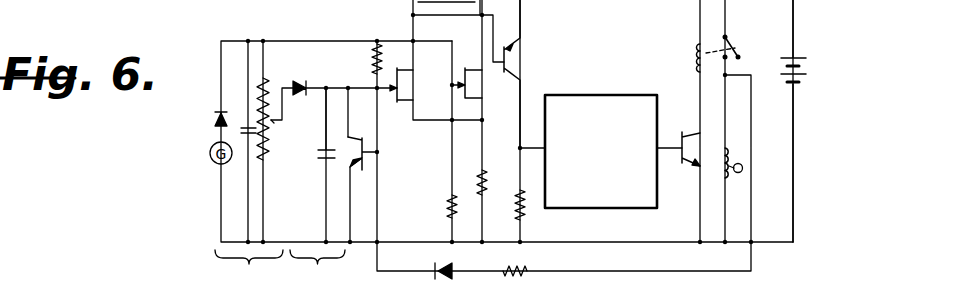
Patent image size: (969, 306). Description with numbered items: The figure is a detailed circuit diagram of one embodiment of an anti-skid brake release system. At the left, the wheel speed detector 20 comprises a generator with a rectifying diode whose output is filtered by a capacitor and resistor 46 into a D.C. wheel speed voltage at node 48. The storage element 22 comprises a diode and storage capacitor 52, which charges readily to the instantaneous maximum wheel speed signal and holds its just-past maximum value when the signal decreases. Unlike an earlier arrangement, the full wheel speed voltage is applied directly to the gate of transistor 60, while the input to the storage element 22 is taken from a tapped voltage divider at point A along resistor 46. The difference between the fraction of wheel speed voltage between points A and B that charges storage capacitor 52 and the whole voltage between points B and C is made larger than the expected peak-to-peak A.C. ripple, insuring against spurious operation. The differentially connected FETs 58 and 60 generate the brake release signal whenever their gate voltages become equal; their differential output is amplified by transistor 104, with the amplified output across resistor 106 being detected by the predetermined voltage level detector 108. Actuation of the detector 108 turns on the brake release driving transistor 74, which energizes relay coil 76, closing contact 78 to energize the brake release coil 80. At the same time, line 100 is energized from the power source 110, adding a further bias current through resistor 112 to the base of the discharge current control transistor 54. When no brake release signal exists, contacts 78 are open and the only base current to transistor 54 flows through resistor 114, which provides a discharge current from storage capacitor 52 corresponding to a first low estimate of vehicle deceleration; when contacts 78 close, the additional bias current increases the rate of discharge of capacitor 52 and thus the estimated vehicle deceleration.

The wheel speed detector 20 is at (249, 269).
The storage element 22 is at (317, 269).
The resistor 46 is at (278, 127).
The node 48 is at (248, 41).
The storage capacitor 52 is at (311, 159).
The discharge current control transistor 54 is at (372, 163).
The FET 58 is at (400, 85).
The FET 60 is at (468, 88).
The brake release driving transistor 74 is at (680, 146).
The relay coil 76 is at (694, 60).
The relay contact 78 is at (740, 50).
The brake release coil 80 is at (725, 163).
The line 100 is at (403, 272).
The transistor 104 is at (533, 52).
The resistor 106 is at (527, 221).
The predetermined voltage level detector 108 is at (597, 93).
The power source 110 is at (802, 57).
The resistor 112 is at (523, 277).
The resistor 114 is at (371, 52).
The point A is at (273, 122).
The point B is at (269, 243).
The point C is at (268, 39).